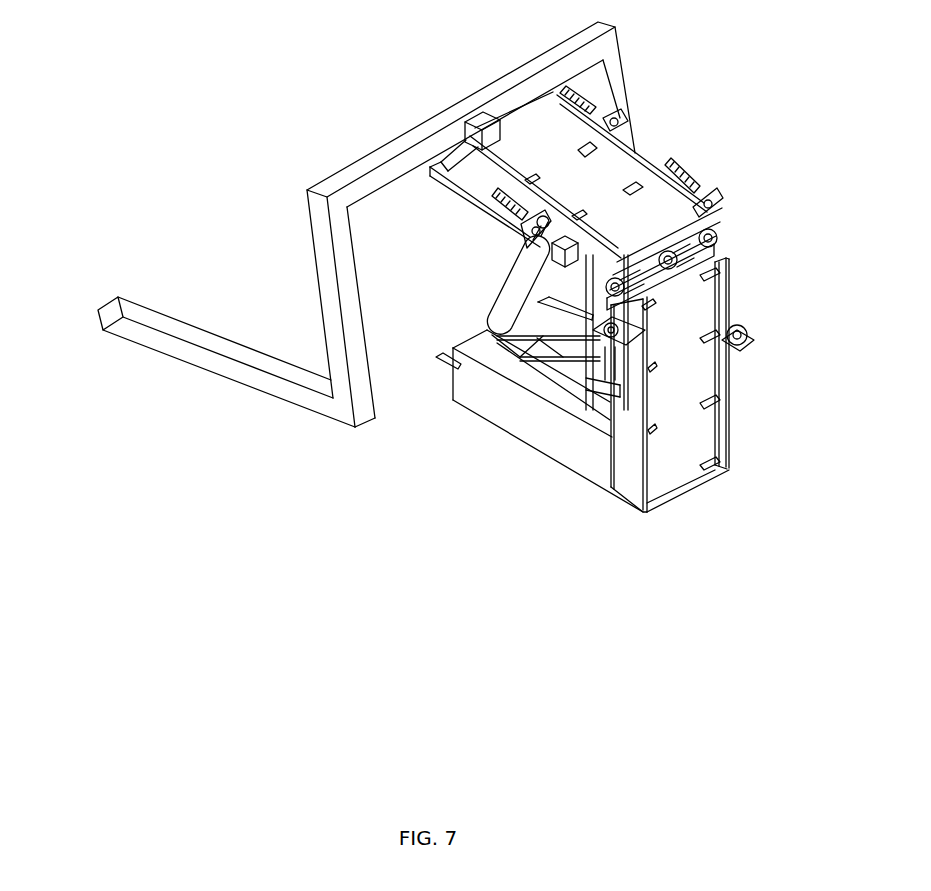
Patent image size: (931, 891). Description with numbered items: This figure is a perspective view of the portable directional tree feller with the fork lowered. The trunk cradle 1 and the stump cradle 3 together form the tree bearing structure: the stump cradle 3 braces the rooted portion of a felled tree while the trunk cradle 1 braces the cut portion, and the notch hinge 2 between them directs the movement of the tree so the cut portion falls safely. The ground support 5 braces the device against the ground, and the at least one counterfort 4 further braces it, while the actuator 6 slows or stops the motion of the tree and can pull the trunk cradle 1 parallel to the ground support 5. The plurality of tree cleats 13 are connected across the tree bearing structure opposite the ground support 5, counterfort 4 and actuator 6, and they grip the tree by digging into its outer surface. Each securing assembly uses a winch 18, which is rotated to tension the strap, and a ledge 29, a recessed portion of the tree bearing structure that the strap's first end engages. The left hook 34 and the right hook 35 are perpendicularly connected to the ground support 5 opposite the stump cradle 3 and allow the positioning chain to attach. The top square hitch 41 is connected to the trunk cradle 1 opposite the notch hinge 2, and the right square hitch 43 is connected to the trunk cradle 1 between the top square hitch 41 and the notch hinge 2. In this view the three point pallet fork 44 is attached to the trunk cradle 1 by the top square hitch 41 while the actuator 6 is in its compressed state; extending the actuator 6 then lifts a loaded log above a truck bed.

The trunk cradle 1 is at (647, 162).
The notch hinge 2 is at (733, 227).
The stump cradle 3 is at (743, 415).
The counterfort 4 is at (562, 346).
The ground support 5 is at (533, 452).
The actuator 6 is at (498, 279).
The tree cleats 13 is at (587, 158).
The winch 18 is at (630, 130).
The ledge 29 is at (607, 417).
The left hook 34 is at (577, 313).
The right hook 35 is at (450, 366).
The top square hitch 41 is at (503, 121).
The right square hitch 43 is at (576, 237).
The three point pallet fork 44 is at (222, 346).